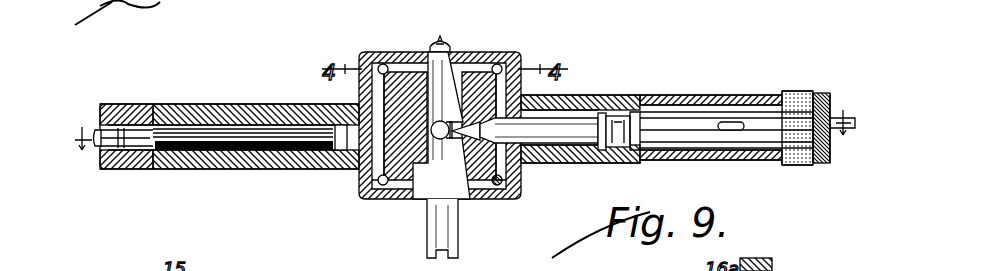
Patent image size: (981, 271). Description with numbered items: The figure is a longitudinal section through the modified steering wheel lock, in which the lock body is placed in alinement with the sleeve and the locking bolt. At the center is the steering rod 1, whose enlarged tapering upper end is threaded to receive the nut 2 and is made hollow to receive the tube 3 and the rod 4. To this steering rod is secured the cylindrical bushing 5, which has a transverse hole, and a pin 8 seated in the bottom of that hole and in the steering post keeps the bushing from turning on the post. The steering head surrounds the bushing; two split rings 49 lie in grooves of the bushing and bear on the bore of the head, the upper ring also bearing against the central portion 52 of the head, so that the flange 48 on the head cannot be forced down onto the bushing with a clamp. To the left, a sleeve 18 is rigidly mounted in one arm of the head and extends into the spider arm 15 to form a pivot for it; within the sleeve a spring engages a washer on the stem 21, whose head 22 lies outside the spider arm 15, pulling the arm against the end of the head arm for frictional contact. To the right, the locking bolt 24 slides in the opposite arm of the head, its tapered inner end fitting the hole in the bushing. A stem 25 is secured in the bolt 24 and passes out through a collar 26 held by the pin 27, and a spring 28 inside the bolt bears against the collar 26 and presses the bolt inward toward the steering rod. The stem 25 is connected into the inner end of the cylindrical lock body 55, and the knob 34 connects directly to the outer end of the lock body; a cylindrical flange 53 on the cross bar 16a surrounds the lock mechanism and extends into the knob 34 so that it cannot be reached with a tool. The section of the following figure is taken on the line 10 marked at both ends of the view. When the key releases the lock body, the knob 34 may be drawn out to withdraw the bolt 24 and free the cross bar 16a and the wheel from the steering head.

The steering rod 1 is at (462, 222).
The nut 2 is at (447, 62).
The tube 3 is at (452, 250).
The rod 4 is at (438, 34).
The bushing 5 is at (358, 180).
The pin 8 is at (436, 136).
The section line 10— 10 is at (81, 129).
The spider arm 15 is at (127, 103).
The cross bar 16a is at (748, 96).
The sleeve 18 is at (214, 160).
The stem 21 is at (110, 170).
The head 22 is at (104, 148).
The locking bolt 24 is at (552, 140).
The stem 25 is at (602, 112).
The collar 26 is at (632, 152).
The pin 27 is at (625, 115).
The spring 28 is at (592, 144).
The knob 34 is at (805, 94).
The flange 48 is at (360, 199).
The split rings 49 is at (500, 62).
The central portion 52 is at (388, 60).
The cylindrical flange 53 is at (792, 166).
The lock body 55 is at (726, 130).